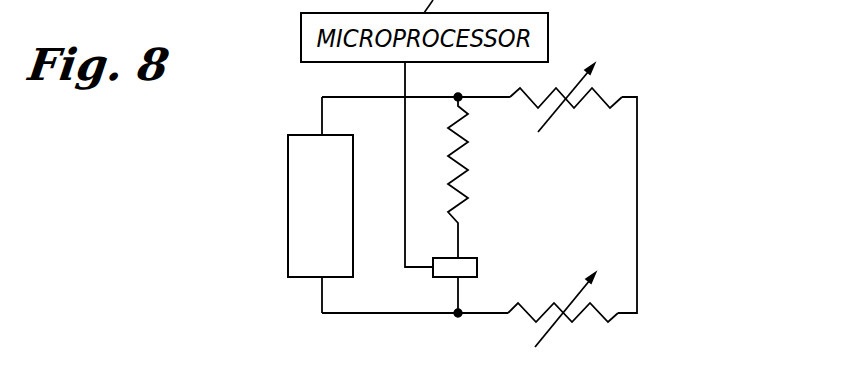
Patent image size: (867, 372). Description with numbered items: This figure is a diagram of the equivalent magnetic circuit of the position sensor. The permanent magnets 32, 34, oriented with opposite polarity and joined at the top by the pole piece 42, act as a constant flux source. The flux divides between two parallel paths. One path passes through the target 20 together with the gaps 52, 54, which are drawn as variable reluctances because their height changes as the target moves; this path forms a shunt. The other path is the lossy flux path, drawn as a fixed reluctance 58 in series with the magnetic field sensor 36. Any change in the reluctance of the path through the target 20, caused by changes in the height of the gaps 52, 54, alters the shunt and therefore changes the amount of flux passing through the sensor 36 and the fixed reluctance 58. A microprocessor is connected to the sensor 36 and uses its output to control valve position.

The target 20 is at (637, 193).
The permanent magnet 32 is at (304, 278).
The permanent magnet 34 is at (304, 134).
The magnetic field sensor 36 is at (477, 267).
The pole piece 42 is at (288, 176).
The gap 52 is at (564, 315).
The gap 54 is at (566, 104).
The resistor 58 is at (487, 177).